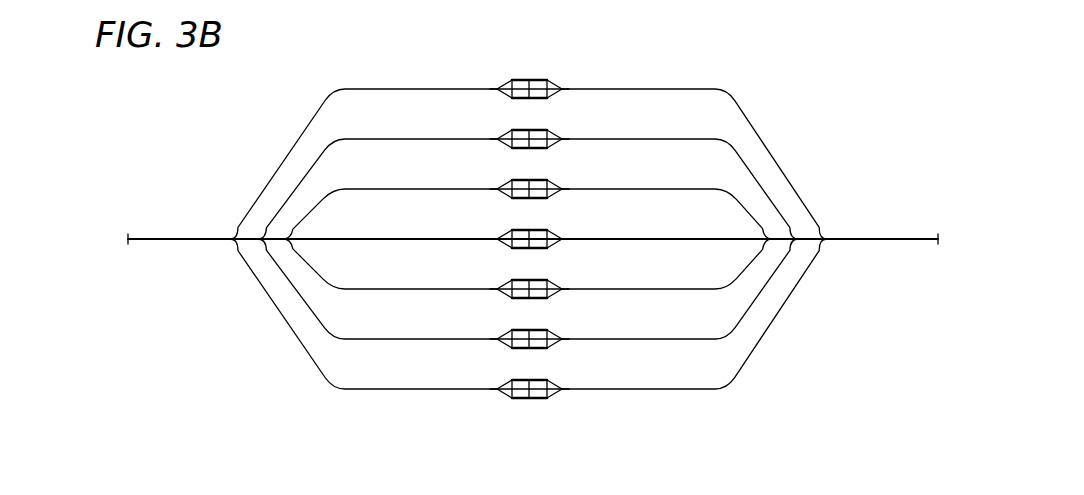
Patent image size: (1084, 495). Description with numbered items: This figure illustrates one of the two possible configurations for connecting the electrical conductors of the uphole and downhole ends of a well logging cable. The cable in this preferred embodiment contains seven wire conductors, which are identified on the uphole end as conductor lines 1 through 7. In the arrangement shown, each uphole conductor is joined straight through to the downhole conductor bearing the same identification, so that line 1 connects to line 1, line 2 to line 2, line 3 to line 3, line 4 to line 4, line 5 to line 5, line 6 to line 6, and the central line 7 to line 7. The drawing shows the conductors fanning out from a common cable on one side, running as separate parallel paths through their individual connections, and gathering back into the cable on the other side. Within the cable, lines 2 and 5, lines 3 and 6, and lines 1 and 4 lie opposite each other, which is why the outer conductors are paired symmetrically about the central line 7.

The conductor line 1 is at (302, 123).
The conductor line 2 is at (302, 177).
The conductor line 3 is at (305, 220).
The conductor line 4 is at (302, 258).
The conductor line 5 is at (298, 297).
The conductor line 6 is at (302, 352).
The conductor line 7 is at (400, 238).